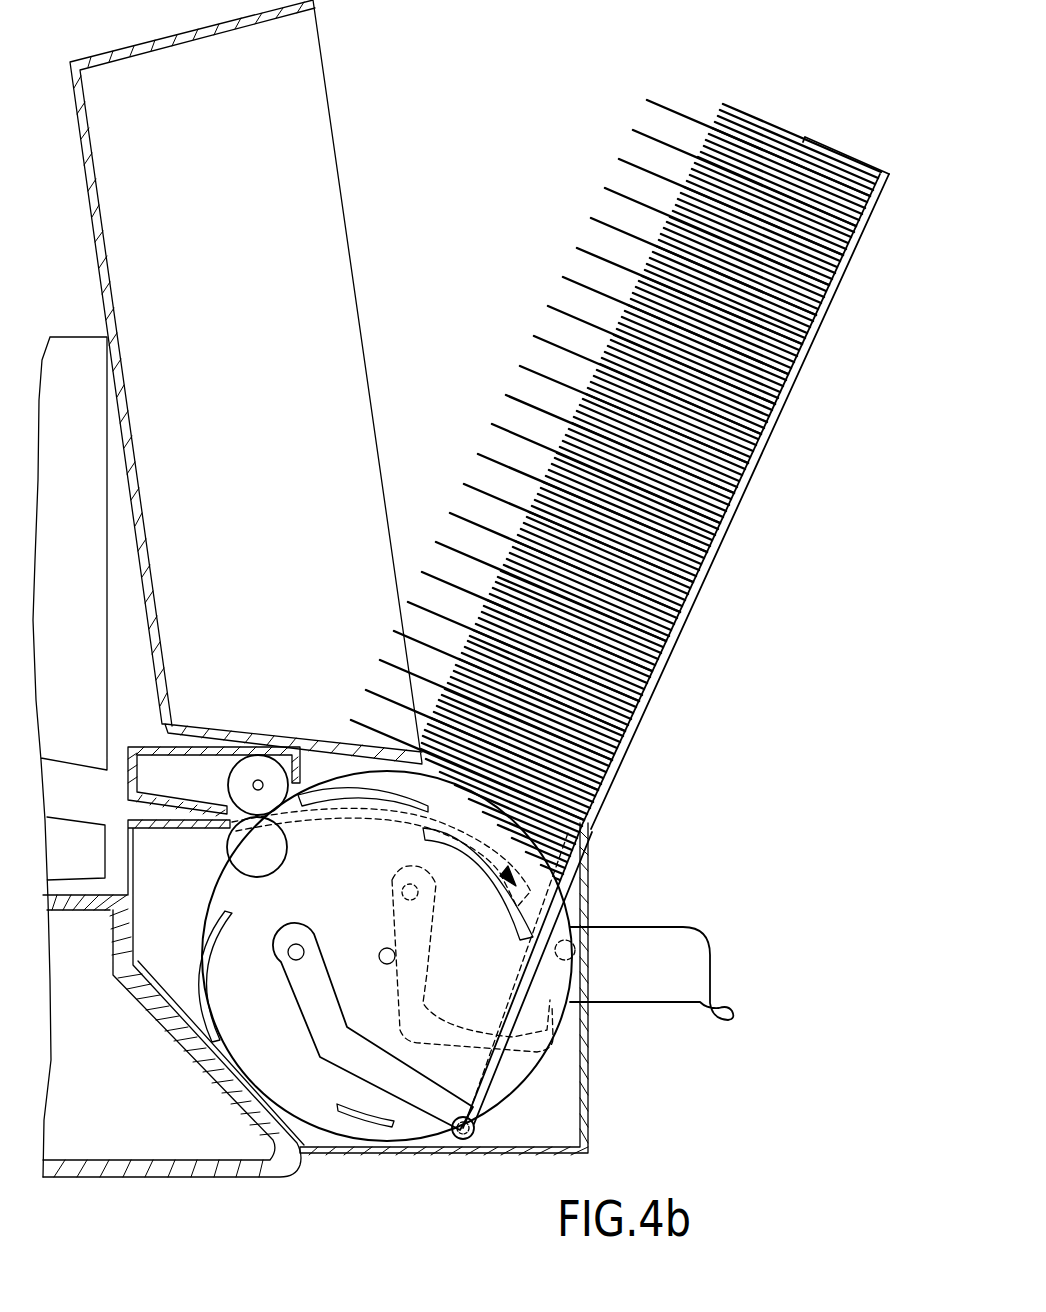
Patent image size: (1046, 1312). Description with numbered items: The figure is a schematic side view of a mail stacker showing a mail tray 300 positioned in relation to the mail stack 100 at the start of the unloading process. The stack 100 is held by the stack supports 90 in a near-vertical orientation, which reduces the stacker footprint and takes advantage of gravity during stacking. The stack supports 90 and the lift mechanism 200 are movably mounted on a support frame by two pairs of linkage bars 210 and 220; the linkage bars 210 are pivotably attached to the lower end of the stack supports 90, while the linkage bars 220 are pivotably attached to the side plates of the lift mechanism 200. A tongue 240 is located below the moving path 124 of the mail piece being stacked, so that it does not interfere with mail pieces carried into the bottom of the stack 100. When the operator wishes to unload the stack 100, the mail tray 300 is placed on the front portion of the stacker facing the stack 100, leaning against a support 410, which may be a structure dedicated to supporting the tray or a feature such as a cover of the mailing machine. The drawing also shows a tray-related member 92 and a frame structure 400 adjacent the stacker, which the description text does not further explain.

The stack supports 90 is at (682, 647).
The tray cap 92 is at (847, 156).
The stack 100 is at (709, 88).
The moving path 124 is at (515, 818).
The lift mechanism 200 is at (687, 944).
The linkage bars 210 is at (355, 1058).
The linkage bars 220 is at (428, 968).
The tongue 240 is at (438, 843).
The mail tray 300 is at (318, 178).
The frame 400 is at (66, 322).
The support 410 is at (103, 680).